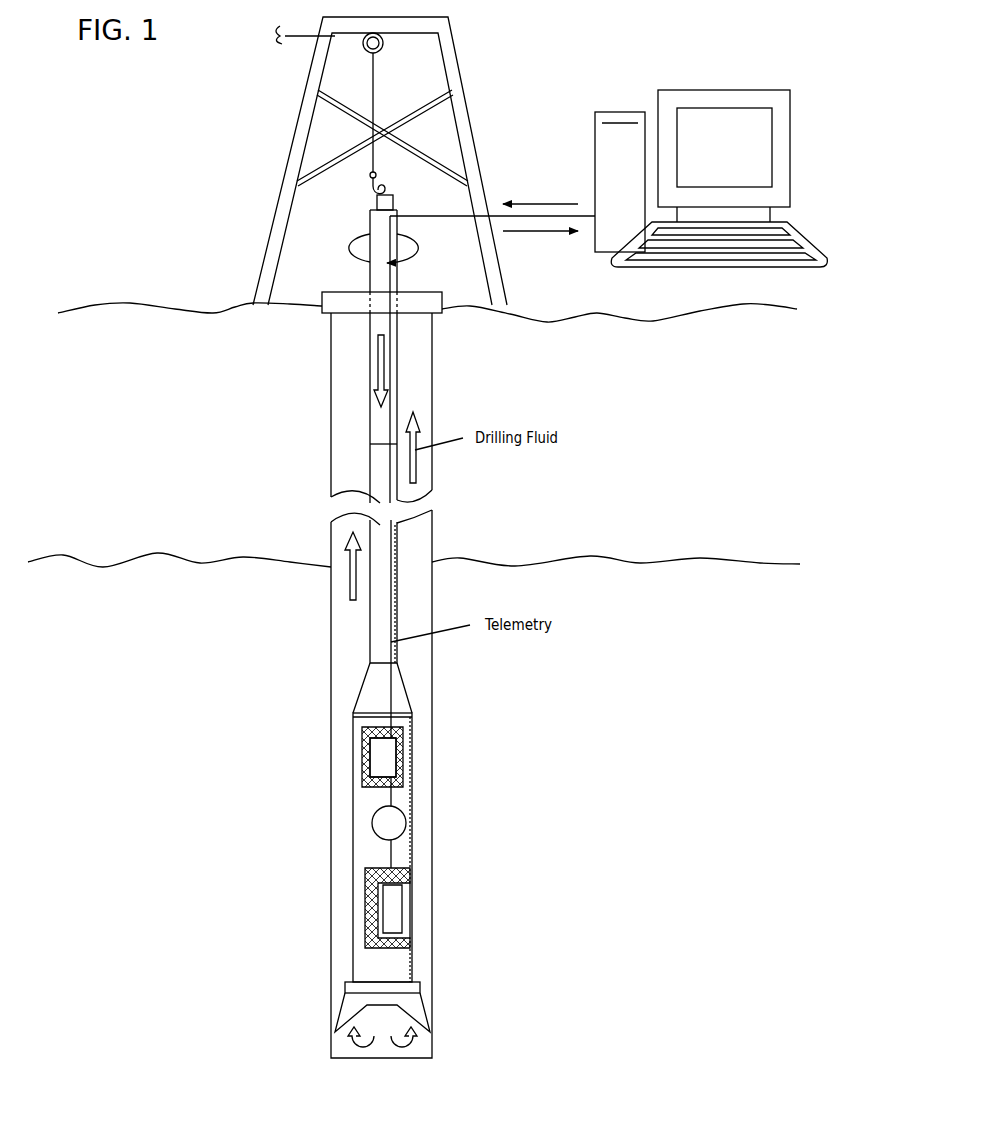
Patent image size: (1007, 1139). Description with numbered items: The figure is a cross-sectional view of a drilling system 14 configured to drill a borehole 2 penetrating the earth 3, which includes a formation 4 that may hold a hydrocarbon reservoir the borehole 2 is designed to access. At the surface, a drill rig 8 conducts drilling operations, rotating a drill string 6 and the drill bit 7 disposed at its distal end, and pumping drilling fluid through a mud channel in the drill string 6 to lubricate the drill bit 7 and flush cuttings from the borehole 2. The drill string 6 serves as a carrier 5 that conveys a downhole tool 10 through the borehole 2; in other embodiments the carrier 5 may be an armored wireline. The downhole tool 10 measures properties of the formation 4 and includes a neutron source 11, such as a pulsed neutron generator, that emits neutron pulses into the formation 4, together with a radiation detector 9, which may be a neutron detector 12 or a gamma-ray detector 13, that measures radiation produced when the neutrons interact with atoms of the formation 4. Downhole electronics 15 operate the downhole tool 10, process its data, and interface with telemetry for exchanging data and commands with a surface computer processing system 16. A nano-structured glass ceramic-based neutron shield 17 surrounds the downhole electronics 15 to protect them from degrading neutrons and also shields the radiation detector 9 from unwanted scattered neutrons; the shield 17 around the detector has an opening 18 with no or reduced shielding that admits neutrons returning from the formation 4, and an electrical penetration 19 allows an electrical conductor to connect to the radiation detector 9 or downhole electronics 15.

The drilling system 14 is at (220, 147).
The drill rig 8 is at (250, 243).
The surface computer processing system 16 is at (642, 72).
The earth 3 is at (175, 380).
The borehole 2 is at (343, 459).
The carrier 5 is at (369, 417).
The formation 4 is at (197, 610).
The drill string 6 is at (370, 637).
The downhole tool 10 is at (353, 710).
The neutron shield 17 is at (402, 735).
The downhole electronics 15 is at (380, 757).
The electrical penetration 19 is at (392, 787).
The neutron source 11 is at (382, 825).
The radiation detector 9 is at (257, 904).
The neutron detector 12 is at (392, 910).
The gamma-ray detector 13 is at (393, 925).
The opening 18 is at (412, 910).
The drill bit 7 is at (348, 1013).